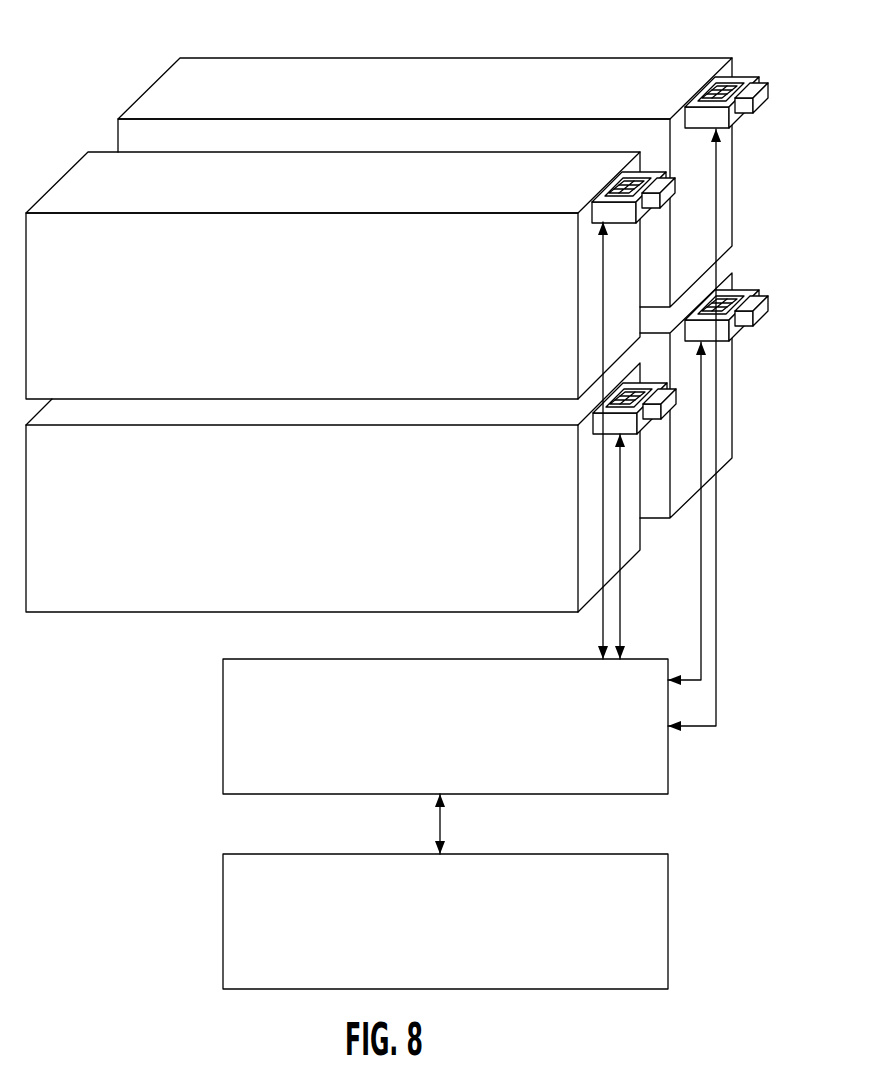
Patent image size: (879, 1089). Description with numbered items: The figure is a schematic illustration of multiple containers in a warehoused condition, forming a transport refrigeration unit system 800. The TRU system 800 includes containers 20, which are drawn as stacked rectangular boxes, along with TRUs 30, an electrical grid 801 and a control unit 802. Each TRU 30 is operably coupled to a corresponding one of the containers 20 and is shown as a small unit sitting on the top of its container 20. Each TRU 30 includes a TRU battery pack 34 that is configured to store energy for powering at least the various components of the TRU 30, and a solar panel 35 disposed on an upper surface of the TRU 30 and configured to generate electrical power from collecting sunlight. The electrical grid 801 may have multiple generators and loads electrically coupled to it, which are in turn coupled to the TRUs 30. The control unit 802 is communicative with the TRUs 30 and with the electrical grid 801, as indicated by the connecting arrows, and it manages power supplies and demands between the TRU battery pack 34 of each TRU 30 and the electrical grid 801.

The container 20 is at (178, 100).
The transport refrigeration unit (TRU) 30 is at (717, 76).
The TRU battery pack 34 is at (673, 200).
The solar panel 35 is at (707, 93).
The TRU system 800 is at (76, 670).
The electrical grid 801 is at (462, 961).
The control unit 802 is at (462, 763).